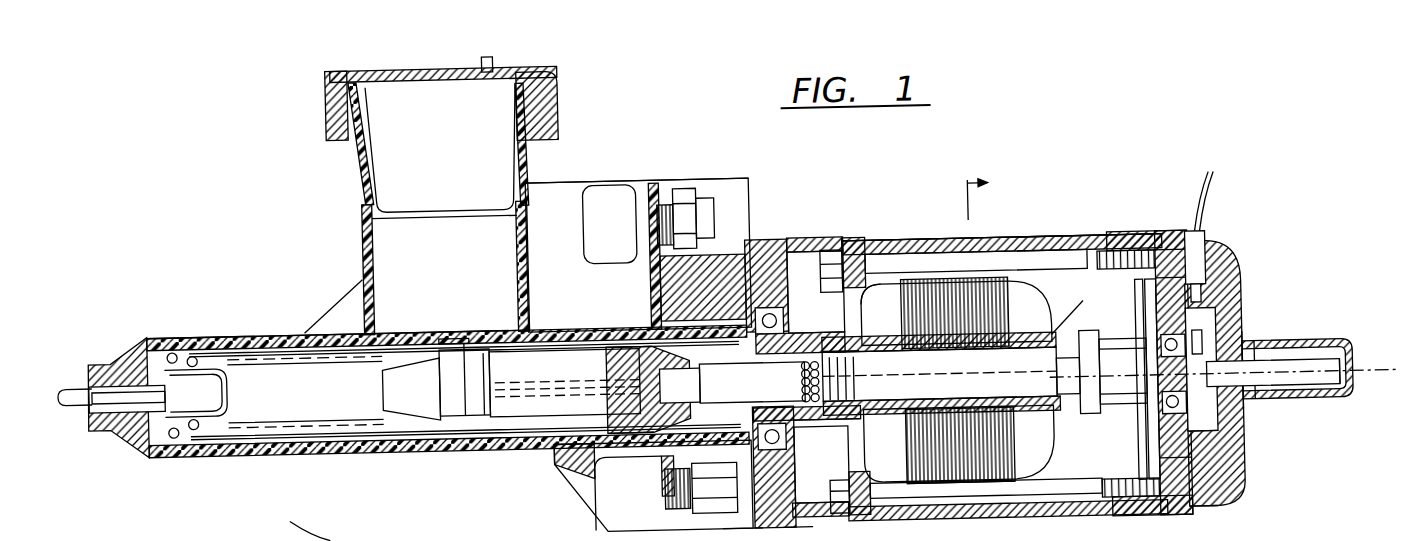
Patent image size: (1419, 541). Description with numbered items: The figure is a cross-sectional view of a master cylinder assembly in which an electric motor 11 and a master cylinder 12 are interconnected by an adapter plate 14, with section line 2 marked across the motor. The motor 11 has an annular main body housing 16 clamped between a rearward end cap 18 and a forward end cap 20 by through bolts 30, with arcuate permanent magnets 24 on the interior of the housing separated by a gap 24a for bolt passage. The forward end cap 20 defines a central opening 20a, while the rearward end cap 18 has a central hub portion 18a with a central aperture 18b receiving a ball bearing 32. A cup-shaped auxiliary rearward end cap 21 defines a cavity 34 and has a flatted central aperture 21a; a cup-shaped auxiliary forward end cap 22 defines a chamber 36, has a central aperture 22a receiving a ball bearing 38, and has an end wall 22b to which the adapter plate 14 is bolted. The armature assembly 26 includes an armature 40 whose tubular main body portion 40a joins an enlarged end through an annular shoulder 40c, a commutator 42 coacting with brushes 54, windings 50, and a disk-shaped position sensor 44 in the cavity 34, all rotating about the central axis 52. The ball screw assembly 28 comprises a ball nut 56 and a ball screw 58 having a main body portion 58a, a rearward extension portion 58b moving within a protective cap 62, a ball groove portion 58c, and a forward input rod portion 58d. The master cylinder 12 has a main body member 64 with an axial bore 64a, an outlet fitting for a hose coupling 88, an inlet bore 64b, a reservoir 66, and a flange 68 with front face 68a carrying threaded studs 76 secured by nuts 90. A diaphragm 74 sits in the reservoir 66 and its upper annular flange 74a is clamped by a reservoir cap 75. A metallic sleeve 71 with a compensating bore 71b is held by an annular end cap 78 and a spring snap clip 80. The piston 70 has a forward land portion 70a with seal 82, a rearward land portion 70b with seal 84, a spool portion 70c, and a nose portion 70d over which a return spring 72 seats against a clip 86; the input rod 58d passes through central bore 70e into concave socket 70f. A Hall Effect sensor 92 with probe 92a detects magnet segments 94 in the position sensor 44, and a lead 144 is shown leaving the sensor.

The section line 2- 2 is at (989, 195).
The electric motor 11 is at (1067, 208).
The master cylinder 12 is at (266, 296).
The adapter plate 14 is at (680, 183).
The annular main body housing 16 is at (1086, 260).
The rearward end cap 18 is at (1144, 260).
The central hub portion 18a is at (1178, 293).
The central aperture 18b is at (1171, 452).
The forward end cap 20 is at (853, 258).
The central opening 20a is at (870, 316).
The auxiliary rearward end cap 21 is at (1243, 504).
The central aperture 21a is at (1264, 370).
The auxiliary forward end cap 22 is at (784, 254).
The central aperture 22a is at (779, 331).
The end wall 22b is at (799, 534).
The permanent magnets 24 is at (998, 268).
The gap 24a is at (295, 522).
The armature assembly 26 is at (1060, 321).
The ball screw assembly 28 is at (841, 365).
The through bolts 30 is at (936, 279).
The ball bearing 32 is at (1187, 341).
The cavity 34 is at (1203, 493).
The chamber 36 is at (743, 533).
The ball bearing 38 is at (799, 459).
The armature 40 is at (1036, 362).
The tubular main body portion 40a is at (973, 498).
The annular shoulder 40c is at (862, 425).
The commutator 42 is at (1133, 440).
The position sensor 44 is at (1200, 433).
The windings 50 is at (1029, 477).
The central lengthwise motor axis 52 is at (1373, 395).
The brushes 54 is at (1137, 322).
The ball nut 56 is at (861, 460).
The ball screw 58 is at (944, 367).
The main body portion 58a is at (1028, 407).
The rearward extension portion 58b is at (1341, 381).
The ball groove portion 58c is at (912, 400).
The forward input rod portion 58d is at (715, 392).
The protective cup-shaped cap 62 is at (1314, 366).
The main body member 64 is at (252, 337).
The elongated axial bore 64a is at (109, 363).
The inlet bore 64b is at (456, 346).
The reservoir 66 is at (355, 189).
The flange 68 is at (608, 192).
The front face 68a is at (657, 196).
The piston 70 is at (529, 441).
The forward land portion 70a is at (482, 437).
The rearward land portion 70b is at (621, 353).
The spool portion 70c is at (538, 391).
The nose portion 70d is at (380, 390).
The central bore 70e is at (607, 380).
The concave socket 70f is at (607, 420).
The sleeve 71 is at (399, 440).
The bore 71b is at (471, 345).
The return spring 72 is at (340, 429).
The diaphragm 74 is at (434, 218).
The upper annular flange 74a is at (535, 88).
The reservoir cap 75 is at (335, 78).
The threaded metal studs 76 is at (717, 230).
The annular end cap 78 is at (721, 462).
The spring snap clip 80 is at (757, 343).
The seal 82 is at (454, 431).
The seal 84 is at (644, 451).
The clip 86 is at (228, 393).
The hose coupling 88 is at (78, 403).
The nuts 90 is at (695, 207).
The Hall Effect proximity sensor 92 is at (1189, 258).
The probe 92a is at (1206, 308).
The permanent magnet segments 94 is at (1200, 456).
The lead wire 144 is at (1212, 228).